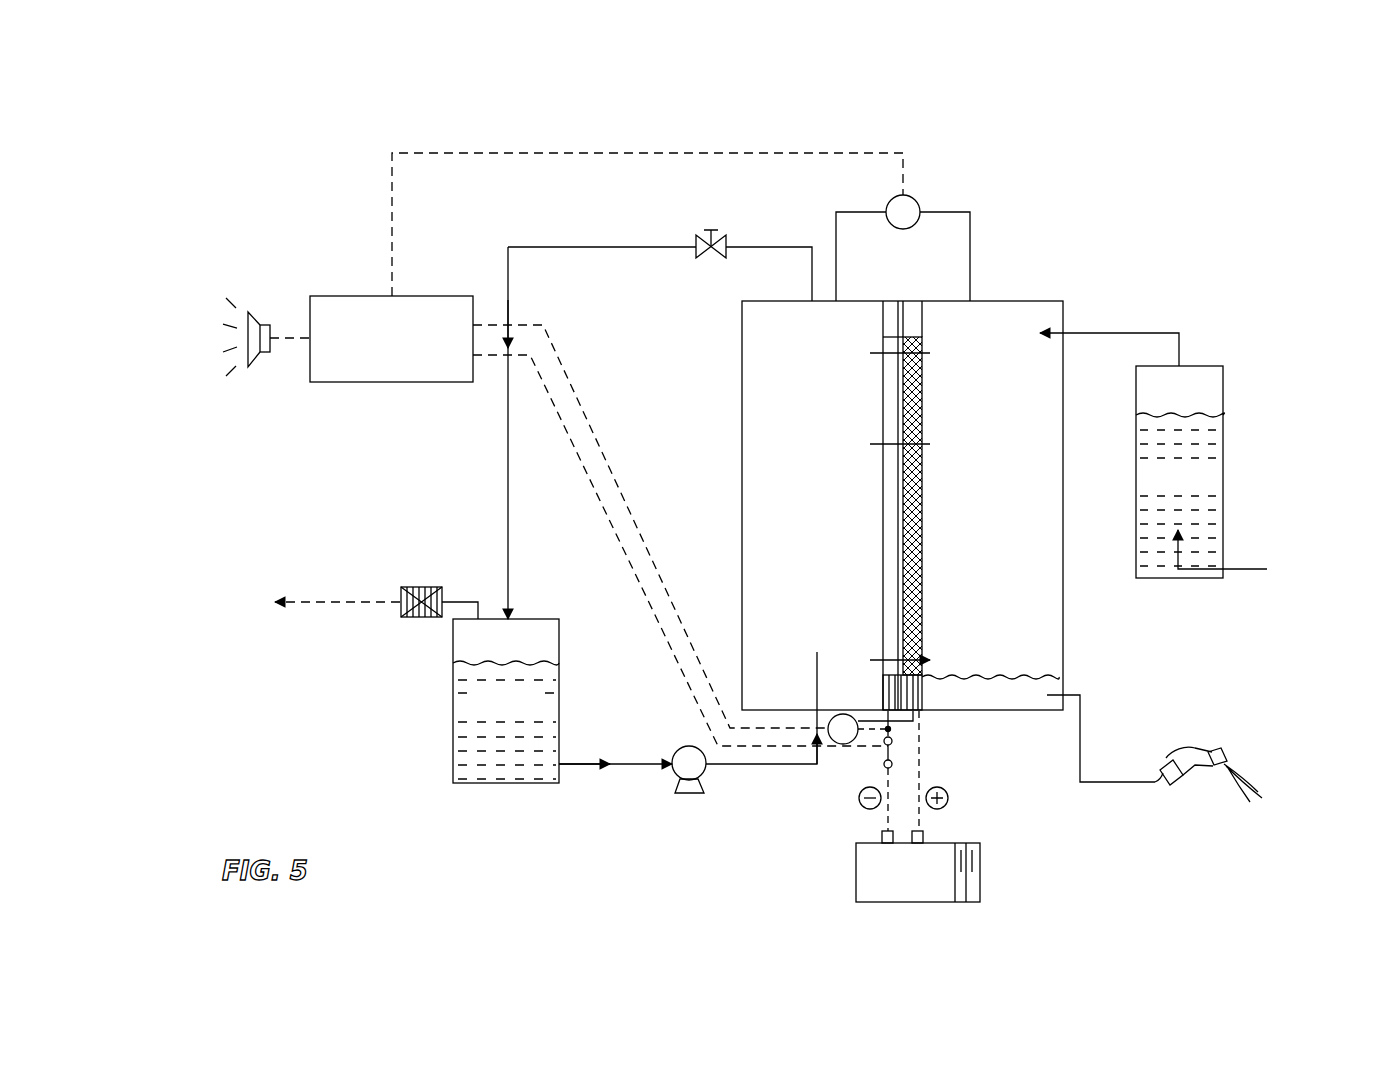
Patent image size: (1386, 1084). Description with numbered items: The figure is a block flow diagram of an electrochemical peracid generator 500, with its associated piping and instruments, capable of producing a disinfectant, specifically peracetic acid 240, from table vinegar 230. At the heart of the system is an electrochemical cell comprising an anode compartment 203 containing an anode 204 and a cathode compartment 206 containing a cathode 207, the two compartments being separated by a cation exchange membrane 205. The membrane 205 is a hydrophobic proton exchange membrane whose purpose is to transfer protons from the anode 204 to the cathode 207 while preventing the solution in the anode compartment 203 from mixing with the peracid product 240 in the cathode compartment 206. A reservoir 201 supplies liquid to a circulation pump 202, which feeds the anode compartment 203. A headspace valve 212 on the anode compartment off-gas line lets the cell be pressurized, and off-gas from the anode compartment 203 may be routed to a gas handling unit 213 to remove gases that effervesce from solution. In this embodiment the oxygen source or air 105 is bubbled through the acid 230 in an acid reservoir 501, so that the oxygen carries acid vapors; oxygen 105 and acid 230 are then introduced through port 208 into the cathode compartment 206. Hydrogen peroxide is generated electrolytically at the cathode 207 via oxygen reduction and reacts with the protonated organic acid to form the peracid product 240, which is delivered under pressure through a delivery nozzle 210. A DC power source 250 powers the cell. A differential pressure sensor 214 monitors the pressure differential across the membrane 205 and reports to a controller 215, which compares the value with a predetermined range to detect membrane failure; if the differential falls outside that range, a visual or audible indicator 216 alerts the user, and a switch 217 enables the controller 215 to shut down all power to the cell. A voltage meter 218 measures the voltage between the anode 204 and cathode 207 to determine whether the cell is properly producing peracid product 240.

The electrochemical peracid generator 500 is at (667, 138).
The reservoir 201 is at (453, 705).
The circulation pump 202 is at (689, 795).
The anode compartment 203 is at (758, 500).
The anode 204 is at (888, 588).
The cation exchange membrane 205 is at (898, 312).
The cathode compartment 206 is at (1048, 613).
The cathode 207 is at (912, 487).
The port 208 is at (1063, 318).
The delivery nozzle 210 is at (1188, 775).
The headspace valve 212 is at (710, 233).
The gas handling unit 213 is at (422, 587).
The differential pressure sensor 214 is at (890, 205).
The controller 215 is at (372, 296).
The visual or audible indicator 216 is at (256, 312).
The switch 217 is at (886, 760).
The voltage meter 218 is at (843, 714).
The organic acid 230 is at (1150, 500).
The peracid product 240 is at (1250, 770).
The DC power source 250 is at (870, 870).
The acid reservoir 501 is at (1223, 450).
The air 105 is at (1230, 568).